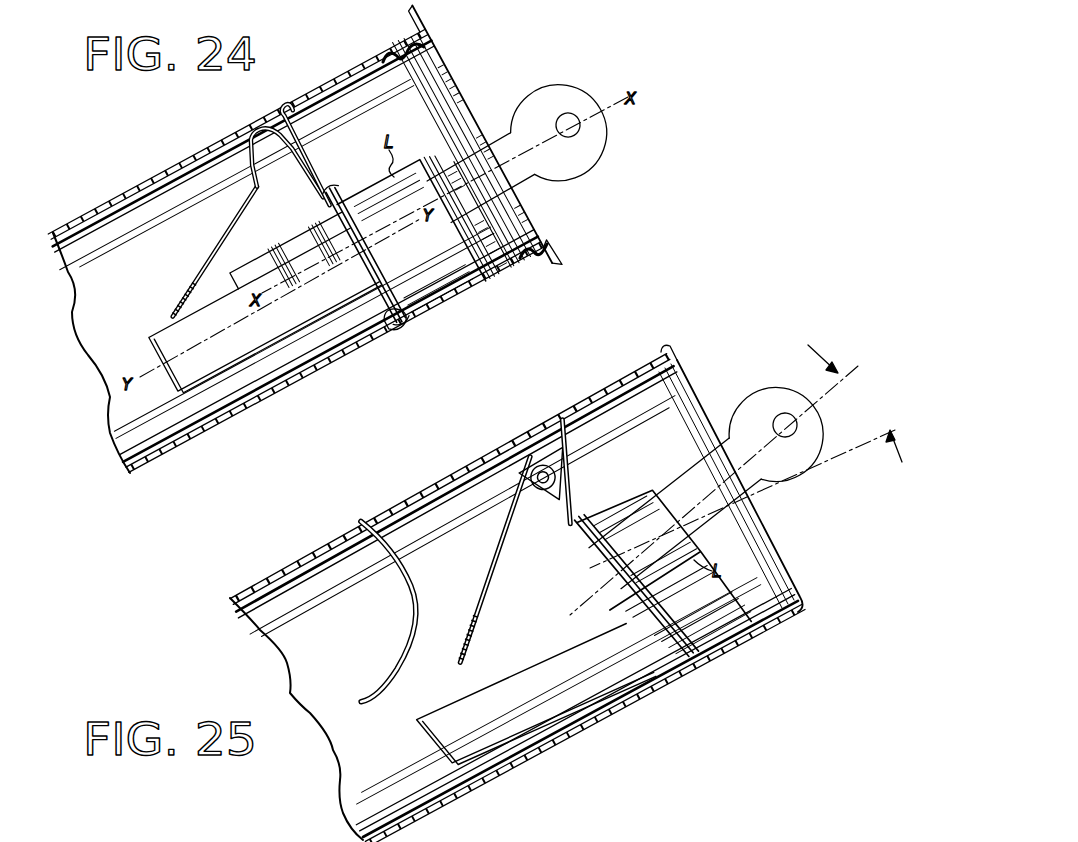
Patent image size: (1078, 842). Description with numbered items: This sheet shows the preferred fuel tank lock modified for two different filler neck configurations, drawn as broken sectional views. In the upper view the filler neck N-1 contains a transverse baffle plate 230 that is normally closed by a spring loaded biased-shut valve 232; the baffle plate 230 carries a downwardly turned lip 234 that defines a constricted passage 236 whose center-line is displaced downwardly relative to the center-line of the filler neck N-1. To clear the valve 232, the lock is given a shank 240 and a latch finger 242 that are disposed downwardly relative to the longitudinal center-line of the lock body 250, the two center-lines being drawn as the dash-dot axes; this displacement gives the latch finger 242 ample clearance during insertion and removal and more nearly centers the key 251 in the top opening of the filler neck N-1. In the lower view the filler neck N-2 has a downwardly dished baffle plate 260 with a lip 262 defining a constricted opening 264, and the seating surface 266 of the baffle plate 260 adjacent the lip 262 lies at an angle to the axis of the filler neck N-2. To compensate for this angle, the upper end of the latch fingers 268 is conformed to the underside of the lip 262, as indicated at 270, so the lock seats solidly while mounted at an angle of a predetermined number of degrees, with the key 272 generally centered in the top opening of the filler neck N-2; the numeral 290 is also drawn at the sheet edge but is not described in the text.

In FIG. 24, the filler neck N-1 is at (210, 147).
In FIG. 25, the filler neck N-2 is at (330, 543).
In FIG. 24, the transverse baffle plate 230 is at (285, 167).
In FIG. 24, the spring loaded biased-shut valve 232 is at (214, 252).
In FIG. 24, the downwardly turned lip 234 is at (366, 255).
In FIG. 24, the constricted passage 236 is at (395, 318).
In FIG. 24, the shank 240 is at (265, 311).
In FIG. 24, the latch finger 242 is at (294, 259).
In FIG. 24, the lock body 250 is at (424, 236).
In FIG. 24, the key 251 is at (592, 145).
In FIG. 25, the downwardly dished baffle plate 260 is at (660, 574).
In FIG. 25, the lip 262 is at (636, 585).
In FIG. 25, the constricted opening 264 is at (495, 560).
In FIG. 25, the baffle plate seating surface 266 is at (558, 477).
In FIG. 25, the latch fingers 268 is at (536, 698).
In FIG. 25, the conformed upper end of latch fingers 270 is at (367, 609).
In FIG. 25, the key 272 is at (762, 396).
In FIG. 25, the rotation indicator 290 is at (822, 841).